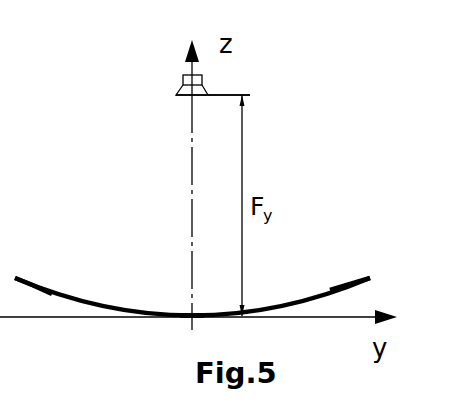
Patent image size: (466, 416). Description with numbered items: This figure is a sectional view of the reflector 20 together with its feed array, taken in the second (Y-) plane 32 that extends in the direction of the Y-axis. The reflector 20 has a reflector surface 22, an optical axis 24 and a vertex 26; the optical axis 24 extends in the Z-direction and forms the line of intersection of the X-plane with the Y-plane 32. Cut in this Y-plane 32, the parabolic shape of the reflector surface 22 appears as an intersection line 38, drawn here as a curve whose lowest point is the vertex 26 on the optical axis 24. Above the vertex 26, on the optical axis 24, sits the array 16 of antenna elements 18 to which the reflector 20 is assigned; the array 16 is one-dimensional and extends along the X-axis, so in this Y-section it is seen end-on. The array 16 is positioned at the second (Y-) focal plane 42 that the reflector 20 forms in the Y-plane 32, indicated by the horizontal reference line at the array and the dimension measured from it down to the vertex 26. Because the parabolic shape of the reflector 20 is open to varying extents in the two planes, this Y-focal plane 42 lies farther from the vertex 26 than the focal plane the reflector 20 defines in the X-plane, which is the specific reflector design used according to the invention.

The array 16 is at (236, 77).
The antenna elements 18 is at (180, 88).
The reflector 20 is at (53, 296).
The reflector surface 22 is at (92, 300).
The optical axis 24 is at (190, 157).
The vertex 26 is at (190, 316).
The second (Y-) plane 32 is at (332, 169).
The intersection line 38 is at (342, 283).
The second (Y-) focal plane 42 is at (233, 95).